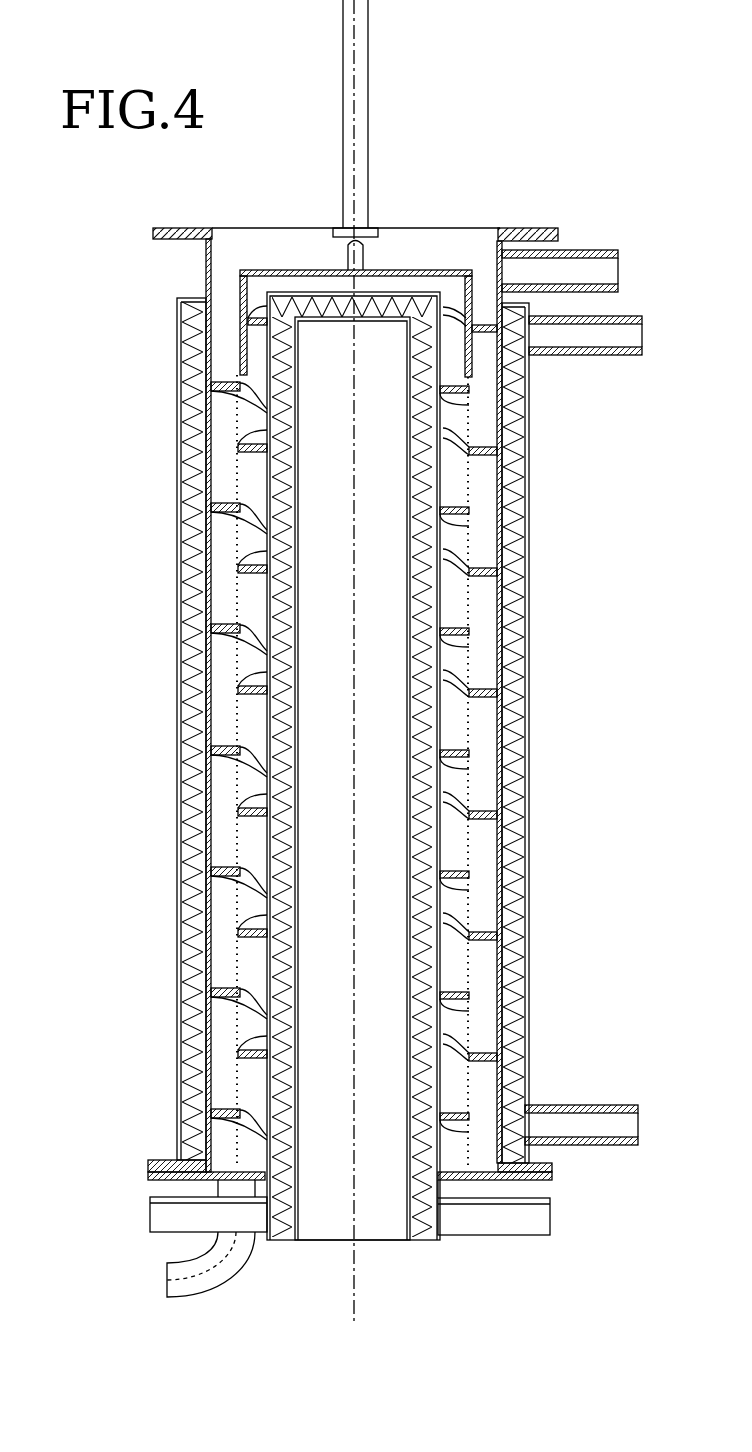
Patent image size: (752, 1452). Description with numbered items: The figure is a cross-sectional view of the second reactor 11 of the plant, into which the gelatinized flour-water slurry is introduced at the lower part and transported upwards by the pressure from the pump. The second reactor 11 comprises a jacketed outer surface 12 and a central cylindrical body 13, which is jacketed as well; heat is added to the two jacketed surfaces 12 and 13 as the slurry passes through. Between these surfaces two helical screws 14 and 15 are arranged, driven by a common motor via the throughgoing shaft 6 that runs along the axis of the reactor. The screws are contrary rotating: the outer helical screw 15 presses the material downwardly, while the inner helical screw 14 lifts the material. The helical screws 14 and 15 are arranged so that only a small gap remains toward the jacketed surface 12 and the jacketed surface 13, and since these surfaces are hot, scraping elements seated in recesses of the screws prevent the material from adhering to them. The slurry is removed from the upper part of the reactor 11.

The throughgoing shaft 6 is at (362, 145).
The second reactor 11 is at (516, 710).
The jacketed outer surface 12 is at (198, 560).
The central cylindrical body 13 is at (290, 700).
The inner helical screw 14 is at (238, 815).
The outer helical screw 15 is at (226, 748).